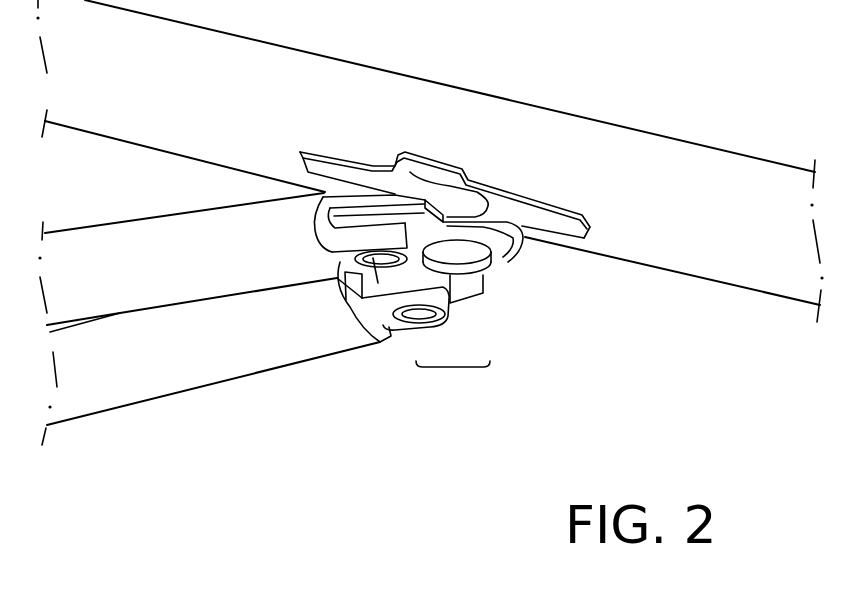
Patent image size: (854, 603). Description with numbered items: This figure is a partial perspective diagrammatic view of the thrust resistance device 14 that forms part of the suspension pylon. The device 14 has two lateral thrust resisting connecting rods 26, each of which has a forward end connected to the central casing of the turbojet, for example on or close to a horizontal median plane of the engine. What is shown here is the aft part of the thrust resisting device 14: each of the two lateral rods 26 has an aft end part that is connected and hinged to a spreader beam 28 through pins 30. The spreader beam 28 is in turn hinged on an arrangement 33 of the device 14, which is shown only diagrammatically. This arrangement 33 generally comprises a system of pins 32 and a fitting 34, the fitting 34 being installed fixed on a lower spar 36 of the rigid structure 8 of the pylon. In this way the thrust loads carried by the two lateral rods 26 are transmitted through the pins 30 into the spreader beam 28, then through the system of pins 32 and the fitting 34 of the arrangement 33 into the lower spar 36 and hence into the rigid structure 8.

The rigid structure 8 is at (704, 277).
The thrust resistance device 14 is at (181, 468).
The lateral thrust resisting connecting rods 26 is at (119, 298).
The spreader beam 28 is at (508, 257).
The pins 30 is at (410, 172).
The system of pins 32 is at (457, 267).
The arrangement 33 is at (453, 378).
The fitting 34 is at (422, 316).
The lower spar 36 is at (657, 258).